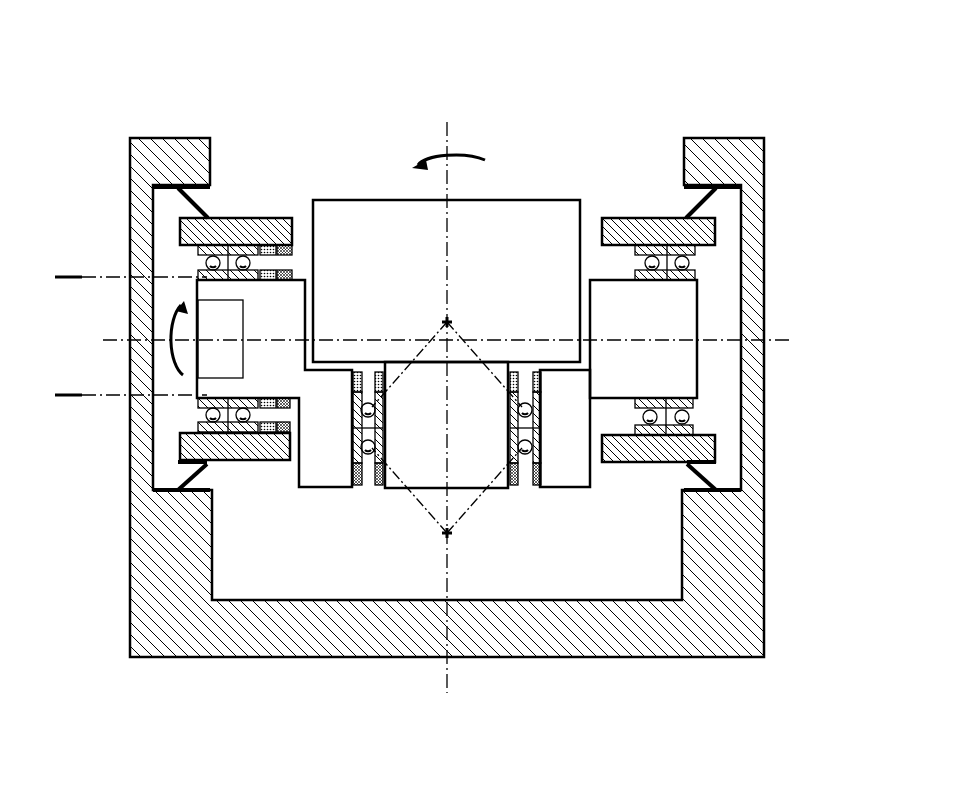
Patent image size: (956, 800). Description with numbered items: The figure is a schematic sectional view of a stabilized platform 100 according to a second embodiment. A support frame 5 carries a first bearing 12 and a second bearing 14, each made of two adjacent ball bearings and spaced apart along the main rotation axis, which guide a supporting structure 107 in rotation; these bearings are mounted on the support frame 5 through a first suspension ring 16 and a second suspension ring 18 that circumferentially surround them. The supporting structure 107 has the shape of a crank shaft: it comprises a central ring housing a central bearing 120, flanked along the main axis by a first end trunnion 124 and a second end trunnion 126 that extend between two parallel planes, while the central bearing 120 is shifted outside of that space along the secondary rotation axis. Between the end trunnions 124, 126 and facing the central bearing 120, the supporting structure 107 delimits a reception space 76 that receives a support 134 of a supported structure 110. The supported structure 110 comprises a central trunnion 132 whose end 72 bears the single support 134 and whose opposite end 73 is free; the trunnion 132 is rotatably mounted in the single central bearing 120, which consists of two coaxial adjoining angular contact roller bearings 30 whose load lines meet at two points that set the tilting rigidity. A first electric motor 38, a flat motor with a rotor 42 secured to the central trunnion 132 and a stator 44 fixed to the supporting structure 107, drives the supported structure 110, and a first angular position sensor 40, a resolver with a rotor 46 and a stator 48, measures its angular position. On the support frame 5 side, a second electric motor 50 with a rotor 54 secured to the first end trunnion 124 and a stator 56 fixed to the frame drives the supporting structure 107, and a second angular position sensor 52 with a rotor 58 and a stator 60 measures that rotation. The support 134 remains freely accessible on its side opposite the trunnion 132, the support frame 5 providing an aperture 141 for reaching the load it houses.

The stabilized platform 100 is at (150, 68).
The aperture 141 is at (207, 167).
The supported structure 110 is at (362, 167).
The support 134 is at (322, 197).
The second angular position sensor 52 is at (259, 232).
The second electric motor 50 is at (275, 232).
The support frame 5 is at (142, 145).
The first suspension ring 16 is at (169, 190).
The first bearing 12 is at (175, 227).
The reception space 76 is at (298, 285).
The second suspension ring 18 is at (695, 194).
The second bearing 14 is at (695, 224).
The first end trunnion 124 is at (199, 281).
The second end trunnion 126 is at (682, 299).
The rotor 42 is at (505, 367).
The stator 44 is at (528, 367).
The first electric motor 38 is at (345, 375).
The supporting structure 107 is at (704, 369).
The rotor 58 is at (192, 389).
The first angular position sensor 40 is at (344, 462).
The end 72 is at (417, 359).
The stator 60 is at (192, 437).
The roller bearing 30 is at (534, 412).
The stator 56 is at (272, 425).
The rotor 54 is at (279, 412).
The central bearing 120 is at (327, 479).
The end 73 is at (479, 457).
The central trunnion 132 is at (504, 480).
The rotor 46 is at (512, 480).
The stator 48 is at (528, 479).